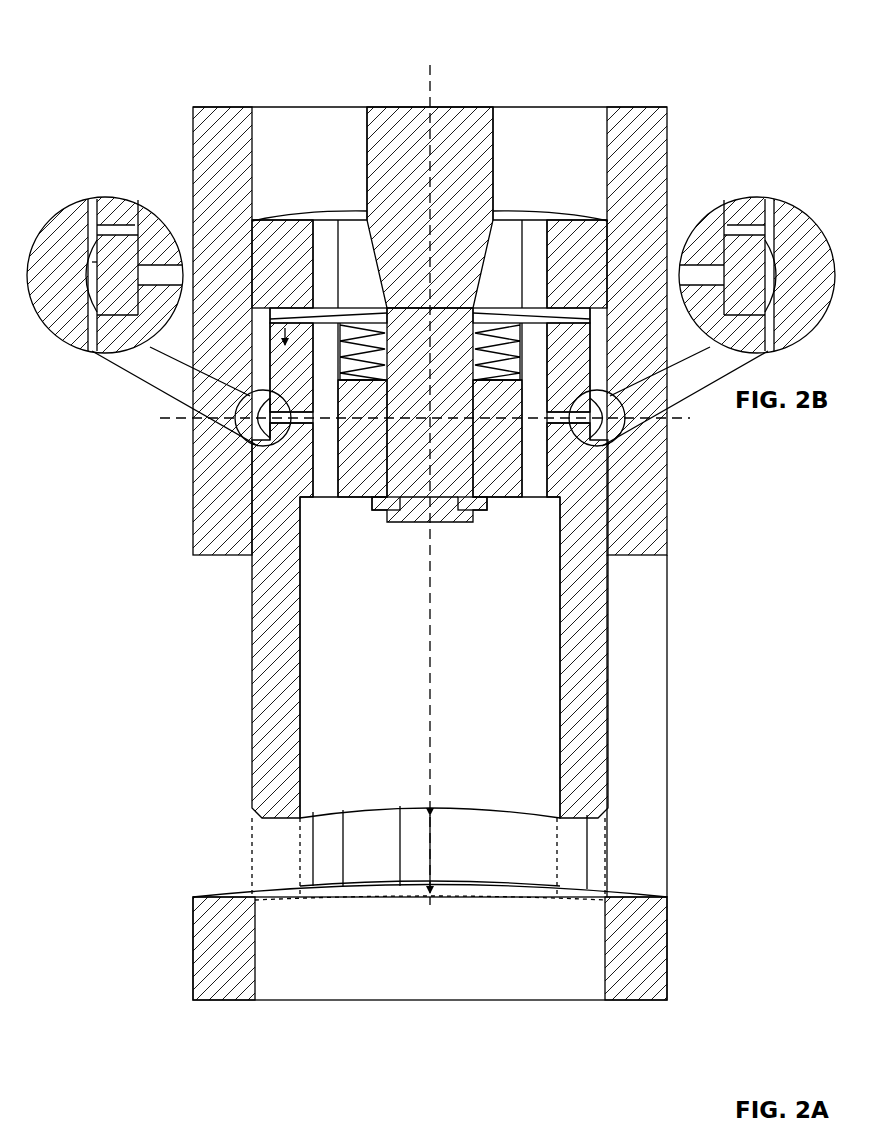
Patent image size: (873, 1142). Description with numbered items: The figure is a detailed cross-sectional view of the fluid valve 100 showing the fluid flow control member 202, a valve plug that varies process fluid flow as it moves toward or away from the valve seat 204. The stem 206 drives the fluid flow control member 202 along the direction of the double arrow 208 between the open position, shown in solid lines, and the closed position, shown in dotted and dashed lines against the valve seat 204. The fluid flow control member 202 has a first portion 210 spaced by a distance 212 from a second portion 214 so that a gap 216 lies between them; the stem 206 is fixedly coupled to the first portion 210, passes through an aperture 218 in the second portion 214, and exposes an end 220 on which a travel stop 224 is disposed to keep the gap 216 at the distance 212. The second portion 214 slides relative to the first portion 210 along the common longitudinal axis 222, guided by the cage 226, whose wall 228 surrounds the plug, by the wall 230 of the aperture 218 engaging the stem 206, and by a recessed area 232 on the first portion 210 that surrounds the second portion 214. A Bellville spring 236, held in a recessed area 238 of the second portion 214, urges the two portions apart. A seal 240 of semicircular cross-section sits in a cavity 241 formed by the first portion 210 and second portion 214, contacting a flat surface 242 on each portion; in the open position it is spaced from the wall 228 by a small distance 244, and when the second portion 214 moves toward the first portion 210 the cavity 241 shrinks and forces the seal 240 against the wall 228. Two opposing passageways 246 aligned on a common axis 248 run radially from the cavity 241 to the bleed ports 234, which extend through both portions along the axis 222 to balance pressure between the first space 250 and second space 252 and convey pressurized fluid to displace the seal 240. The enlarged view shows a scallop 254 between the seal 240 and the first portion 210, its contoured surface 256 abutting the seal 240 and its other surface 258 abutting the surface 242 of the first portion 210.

In FIG. 2A, the fluid valve 100 is at (118, 40).
In FIG. 2A, the fluid flow control member 202 is at (550, 125).
In FIG. 2A, the valve seat 204 is at (235, 897).
In FIG. 2A, the stem 206 is at (370, 122).
In FIG. 2A, the double arrow 208 is at (434, 840).
In FIG. 2A, the first portion 210 is at (552, 215).
In FIG. 2B, the first portion 210 is at (722, 200).
In FIG. 2A, the distance 212 is at (288, 300).
In FIG. 2A, the second portion 214 is at (250, 690).
In FIG. 2B, the second portion 214 is at (743, 331).
In FIG. 2A, the gap 216 is at (266, 316).
In FIG. 2A, the aperture 218 is at (386, 381).
In FIG. 2A, the end 220 is at (422, 522).
In FIG. 2A, the common longitudinal axis 222 is at (432, 633).
In FIG. 2A, the travel stop 224 is at (372, 503).
In FIG. 2A, the cage 226 is at (193, 480).
In FIG. 2A, the wall 228 is at (258, 124).
In FIG. 2A, the wall 230 is at (472, 500).
In FIG. 2A, the recessed area 232 is at (592, 305).
In FIG. 2A, the bleed ports 234 is at (322, 219).
In FIG. 2A, the Bellville spring 236 is at (380, 306).
In FIG. 2A, the recessed area 238 is at (522, 383).
In FIG. 2A, the seal 240 is at (258, 444).
In FIG. 2B, the seal 240 is at (746, 271).
In FIG. 2A, the cavity 241 is at (252, 402).
In FIG. 2B, the cavity 241 is at (770, 310).
In FIG. 2A, the surface 242 is at (118, 232).
In FIG. 2B, the surface 242 is at (733, 242).
In FIG. 2A, the distance 244 is at (95, 264).
In FIG. 2A, the passageways 246 is at (320, 418).
In FIG. 2A, the common axis 248 is at (190, 420).
In FIG. 2A, the first space 250 is at (429, 163).
In FIG. 2A, the second space 252 is at (431, 928).
In FIG. 2B, the scallop 254 is at (796, 271).
In FIG. 2B, the contoured surface 256 is at (728, 245).
In FIG. 2B, the surface 258 is at (752, 238).